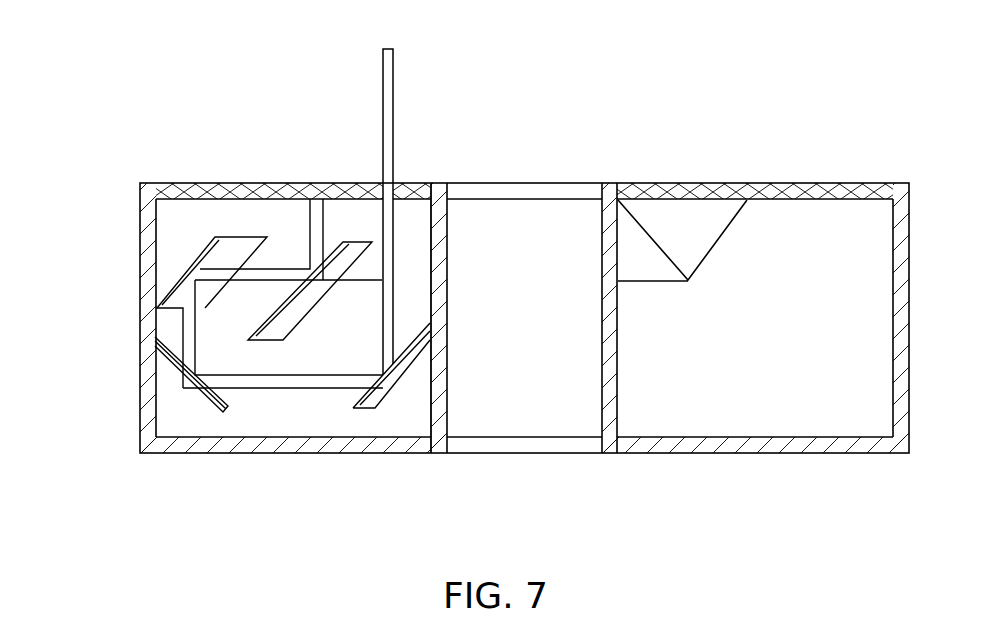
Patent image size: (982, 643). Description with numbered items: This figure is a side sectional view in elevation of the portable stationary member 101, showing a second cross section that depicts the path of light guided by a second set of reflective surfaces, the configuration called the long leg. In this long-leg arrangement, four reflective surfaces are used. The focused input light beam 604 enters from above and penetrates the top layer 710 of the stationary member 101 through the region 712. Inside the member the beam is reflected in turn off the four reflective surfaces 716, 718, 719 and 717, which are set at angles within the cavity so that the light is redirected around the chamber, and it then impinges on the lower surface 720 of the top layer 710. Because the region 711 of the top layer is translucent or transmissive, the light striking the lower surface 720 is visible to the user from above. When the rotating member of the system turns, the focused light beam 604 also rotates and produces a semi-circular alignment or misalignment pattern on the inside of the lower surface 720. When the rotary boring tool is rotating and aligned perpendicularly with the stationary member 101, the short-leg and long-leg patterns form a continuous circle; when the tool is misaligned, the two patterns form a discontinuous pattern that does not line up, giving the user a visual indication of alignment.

The top layer 710 is at (127, 199).
The translucent region 711 is at (272, 174).
The lower surface 720 is at (196, 204).
The reflective surface 718 is at (326, 207).
The focused input light beam 604 is at (397, 75).
The region 712 is at (404, 175).
The stationary member 101 is at (586, 163).
The reflective surface 719 is at (128, 348).
The reflective surface 717 is at (294, 346).
The reflective surface 716 is at (362, 414).